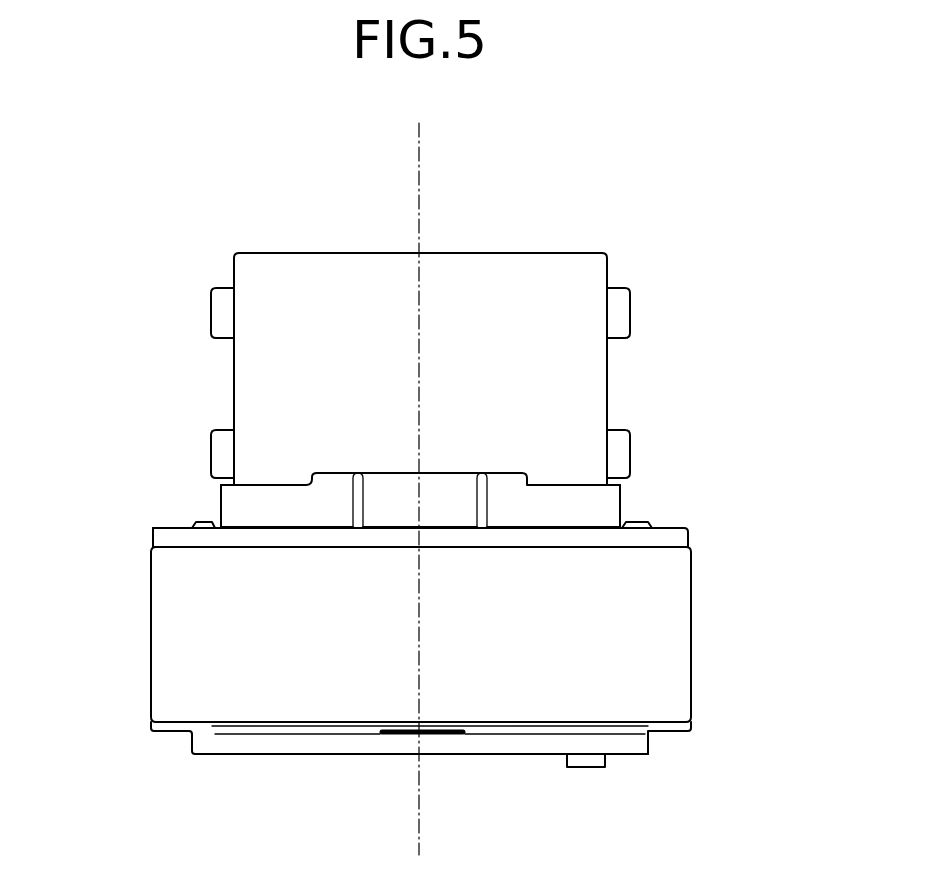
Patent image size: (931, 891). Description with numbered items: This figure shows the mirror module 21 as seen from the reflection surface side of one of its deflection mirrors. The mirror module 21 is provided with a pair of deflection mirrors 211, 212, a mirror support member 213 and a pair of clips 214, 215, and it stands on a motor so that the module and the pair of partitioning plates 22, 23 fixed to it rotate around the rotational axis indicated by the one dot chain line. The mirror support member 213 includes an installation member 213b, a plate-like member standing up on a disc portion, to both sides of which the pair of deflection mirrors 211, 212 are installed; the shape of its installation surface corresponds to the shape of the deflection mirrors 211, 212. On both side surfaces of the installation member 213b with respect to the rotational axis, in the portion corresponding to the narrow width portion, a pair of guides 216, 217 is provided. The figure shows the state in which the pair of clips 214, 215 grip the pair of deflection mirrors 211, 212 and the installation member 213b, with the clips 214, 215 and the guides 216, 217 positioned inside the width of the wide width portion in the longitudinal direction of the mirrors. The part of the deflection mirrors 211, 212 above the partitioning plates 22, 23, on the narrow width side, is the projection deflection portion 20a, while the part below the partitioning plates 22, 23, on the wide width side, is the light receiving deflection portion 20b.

The mirror module 21 is at (288, 157).
The projection deflection portion 20a is at (580, 385).
The deflection mirror 211 is at (492, 268).
The deflection mirror 212 is at (549, 245).
The guide 216 is at (620, 287).
The guide 217 is at (215, 287).
The clip 215 is at (221, 505).
The clip 214 is at (620, 503).
The partitioning plate 22 is at (670, 540).
The partitioning plate 23 is at (152, 535).
The light receiving deflection portion 20b is at (655, 636).
The mirror support member 213 is at (540, 755).
The installation member 213b is at (650, 745).